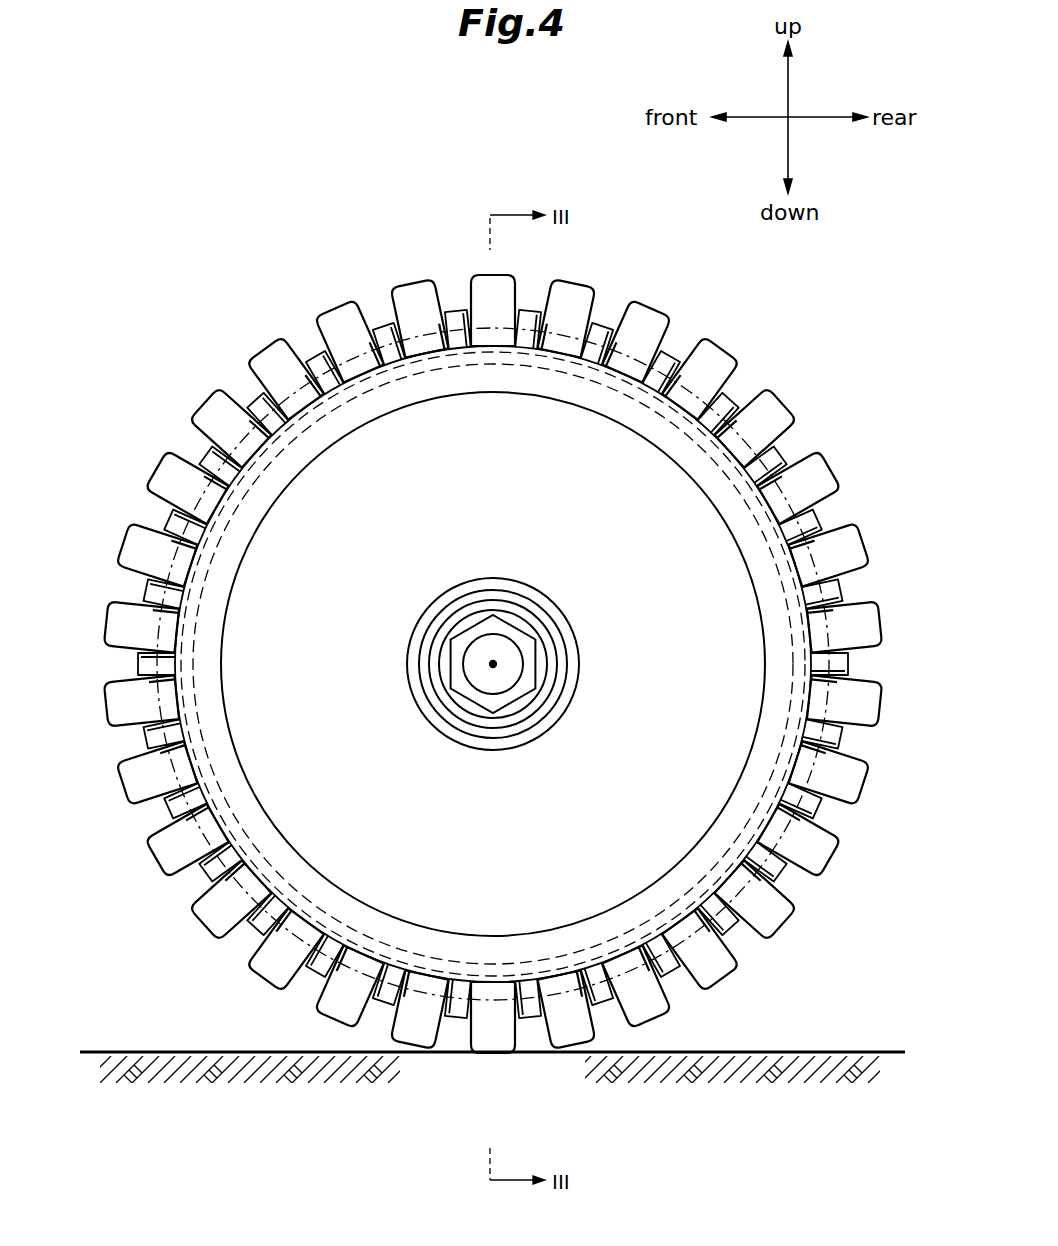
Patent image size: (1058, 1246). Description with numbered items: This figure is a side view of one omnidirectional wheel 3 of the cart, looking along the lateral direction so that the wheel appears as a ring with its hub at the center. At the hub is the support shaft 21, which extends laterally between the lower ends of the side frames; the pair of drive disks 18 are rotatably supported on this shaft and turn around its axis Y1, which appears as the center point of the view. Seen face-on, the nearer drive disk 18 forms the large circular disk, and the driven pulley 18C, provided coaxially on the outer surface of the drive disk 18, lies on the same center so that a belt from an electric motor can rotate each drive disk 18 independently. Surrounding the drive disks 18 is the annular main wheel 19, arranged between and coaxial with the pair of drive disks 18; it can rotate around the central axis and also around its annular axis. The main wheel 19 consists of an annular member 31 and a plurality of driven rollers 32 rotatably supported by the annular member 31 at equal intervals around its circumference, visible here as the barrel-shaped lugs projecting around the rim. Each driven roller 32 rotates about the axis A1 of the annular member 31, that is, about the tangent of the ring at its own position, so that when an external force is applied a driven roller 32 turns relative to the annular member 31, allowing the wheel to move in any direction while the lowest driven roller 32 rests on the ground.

The omnidirectional wheel 3 is at (215, 245).
The drive disk 18 is at (318, 608).
The driven pulley 18C is at (202, 628).
The main wheel 19 is at (320, 309).
The support shaft 21 is at (480, 652).
The annular member 31 is at (633, 345).
The driven roller 32 is at (873, 622).
The axis of the annular member A1 is at (785, 480).
The axis of the support shaft Y1 is at (493, 664).